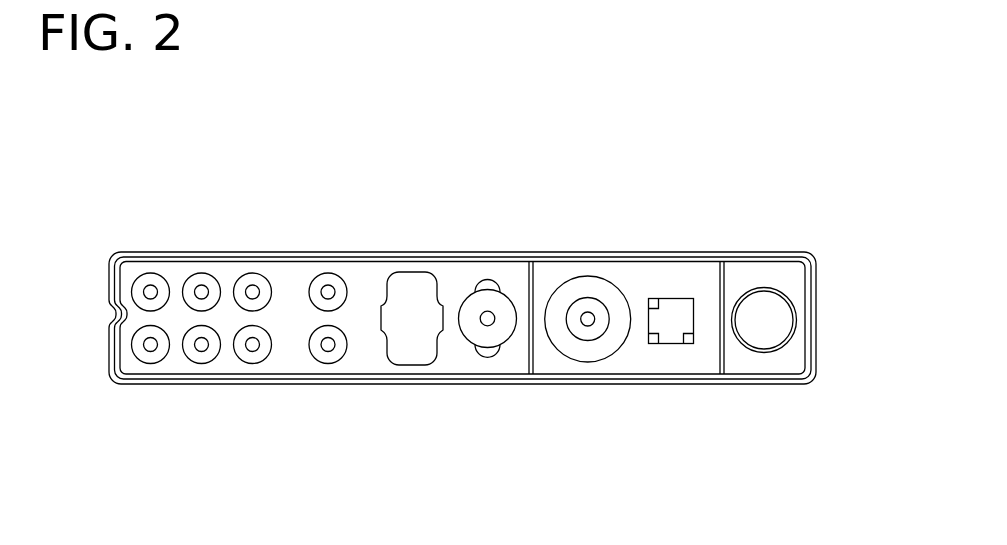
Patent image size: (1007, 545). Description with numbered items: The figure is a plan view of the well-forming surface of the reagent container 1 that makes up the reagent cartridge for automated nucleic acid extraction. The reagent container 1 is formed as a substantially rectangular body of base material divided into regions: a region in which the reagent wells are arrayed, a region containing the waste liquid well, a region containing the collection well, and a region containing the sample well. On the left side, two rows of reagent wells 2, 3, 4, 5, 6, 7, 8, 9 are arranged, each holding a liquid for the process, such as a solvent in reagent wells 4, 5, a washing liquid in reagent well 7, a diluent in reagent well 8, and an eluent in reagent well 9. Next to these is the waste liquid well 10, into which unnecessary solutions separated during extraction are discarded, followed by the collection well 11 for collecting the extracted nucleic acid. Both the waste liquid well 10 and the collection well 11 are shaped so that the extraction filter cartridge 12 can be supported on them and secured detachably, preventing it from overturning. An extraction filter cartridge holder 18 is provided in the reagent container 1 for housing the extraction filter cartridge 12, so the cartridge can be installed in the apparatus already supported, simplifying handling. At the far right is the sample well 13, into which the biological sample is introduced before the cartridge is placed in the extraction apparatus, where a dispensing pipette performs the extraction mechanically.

The reagent container 1 is at (455, 355).
The reagent well 2 is at (150, 281).
The reagent well 3 is at (202, 281).
The reagent well 4 is at (252, 281).
The reagent well 5 is at (328, 281).
The reagent well 6 is at (150, 356).
The reagent well 7 is at (202, 356).
The reagent well 8 is at (252, 356).
The reagent well 9 is at (328, 356).
The waste liquid well 10 is at (407, 285).
The collection well 11 is at (486, 288).
The extraction filter cartridge 12 is at (584, 288).
The sample well 13 is at (762, 303).
The extraction filter cartridge holder 18 is at (611, 354).